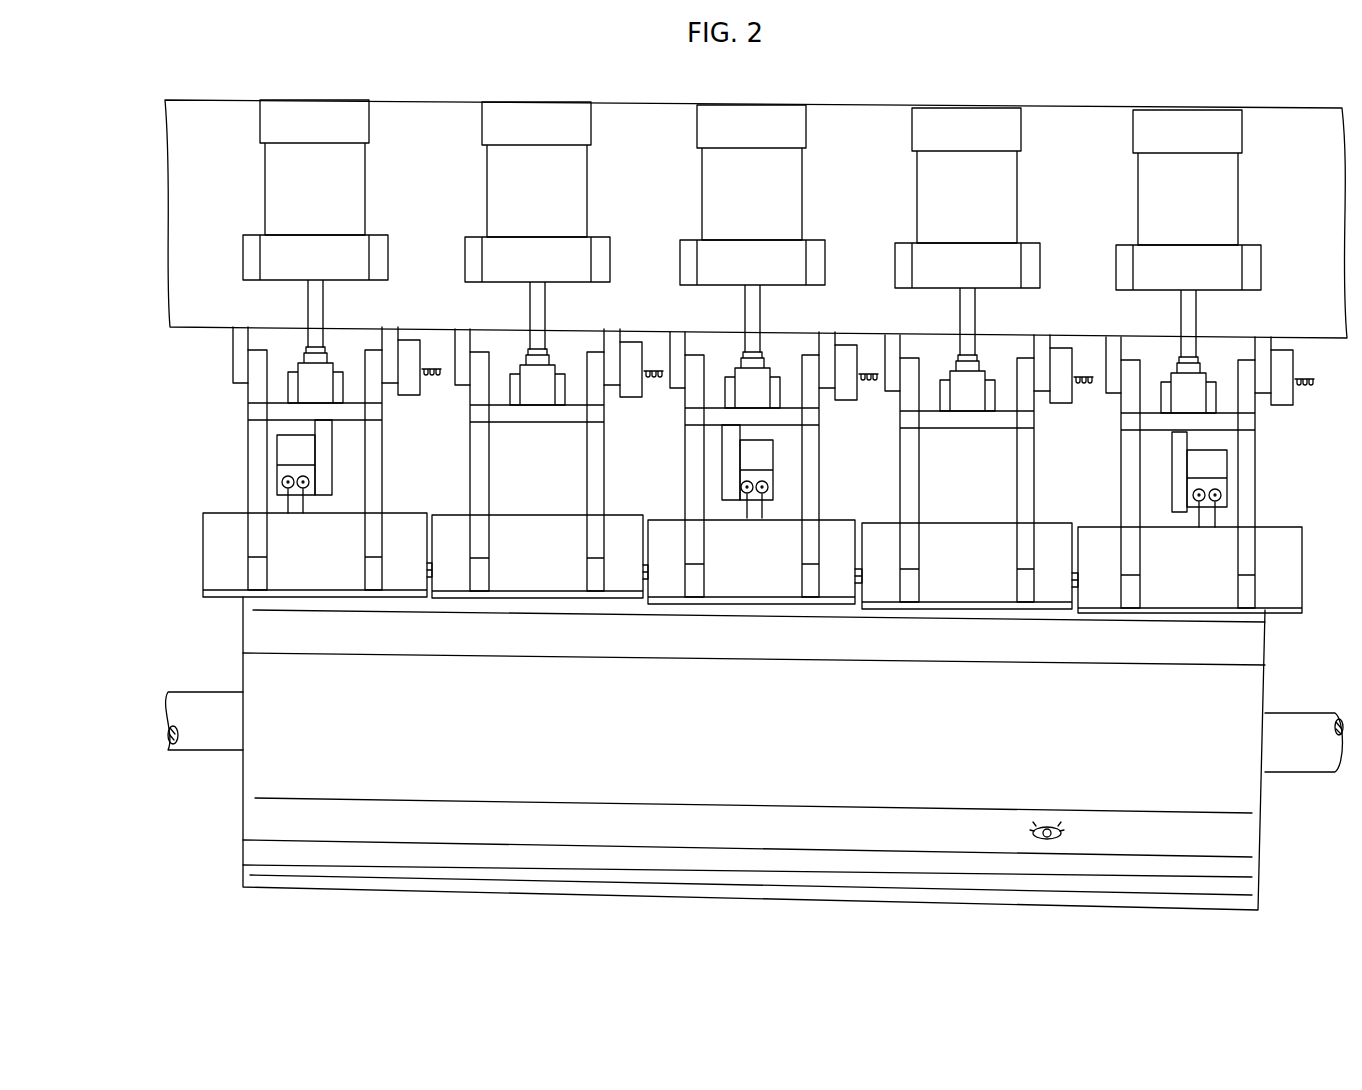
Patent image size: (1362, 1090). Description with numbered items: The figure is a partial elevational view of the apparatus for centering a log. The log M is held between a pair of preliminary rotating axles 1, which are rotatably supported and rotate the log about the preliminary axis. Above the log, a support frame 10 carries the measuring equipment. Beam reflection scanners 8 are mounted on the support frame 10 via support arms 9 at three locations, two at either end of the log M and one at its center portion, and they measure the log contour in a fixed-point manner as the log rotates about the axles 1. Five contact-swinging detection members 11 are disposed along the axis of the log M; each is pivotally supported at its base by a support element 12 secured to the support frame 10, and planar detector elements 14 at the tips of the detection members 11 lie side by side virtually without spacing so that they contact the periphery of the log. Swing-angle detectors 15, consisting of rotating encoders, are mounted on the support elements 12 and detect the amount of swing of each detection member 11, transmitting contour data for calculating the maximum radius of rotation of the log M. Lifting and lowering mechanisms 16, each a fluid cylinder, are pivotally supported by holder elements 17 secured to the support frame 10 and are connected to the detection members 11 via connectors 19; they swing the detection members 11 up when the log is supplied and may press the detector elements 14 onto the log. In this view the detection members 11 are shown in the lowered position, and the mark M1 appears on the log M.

The preliminary rotating axles 1 is at (1310, 755).
The beam reflection scanners 8 is at (278, 472).
The support arms 9 is at (325, 452).
The support frame 10 is at (1323, 330).
The contact-swinging detection members 11 is at (372, 522).
The support element 12 is at (240, 367).
The planar detector elements 14 is at (223, 578).
The swing-angle detectors 15 is at (628, 352).
The lifting and lowering mechanisms 16 is at (272, 128).
The holder element 17 is at (380, 243).
The connector 19 is at (775, 365).
The log M is at (260, 752).
The mark M1 is at (1047, 825).